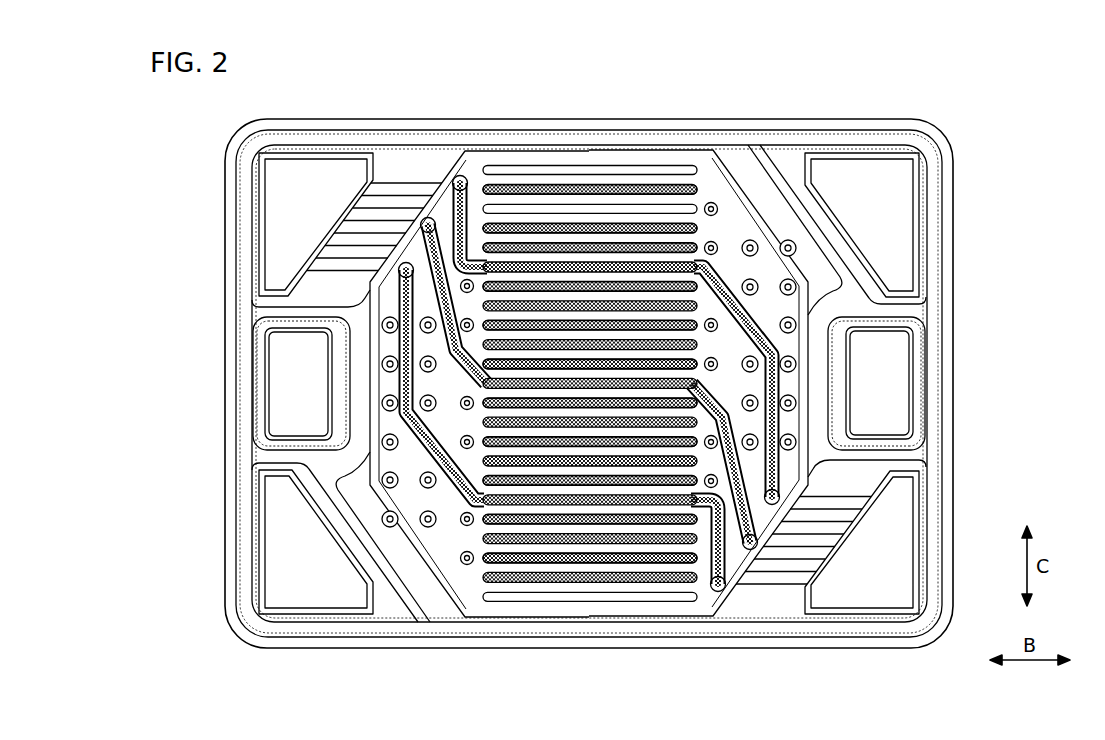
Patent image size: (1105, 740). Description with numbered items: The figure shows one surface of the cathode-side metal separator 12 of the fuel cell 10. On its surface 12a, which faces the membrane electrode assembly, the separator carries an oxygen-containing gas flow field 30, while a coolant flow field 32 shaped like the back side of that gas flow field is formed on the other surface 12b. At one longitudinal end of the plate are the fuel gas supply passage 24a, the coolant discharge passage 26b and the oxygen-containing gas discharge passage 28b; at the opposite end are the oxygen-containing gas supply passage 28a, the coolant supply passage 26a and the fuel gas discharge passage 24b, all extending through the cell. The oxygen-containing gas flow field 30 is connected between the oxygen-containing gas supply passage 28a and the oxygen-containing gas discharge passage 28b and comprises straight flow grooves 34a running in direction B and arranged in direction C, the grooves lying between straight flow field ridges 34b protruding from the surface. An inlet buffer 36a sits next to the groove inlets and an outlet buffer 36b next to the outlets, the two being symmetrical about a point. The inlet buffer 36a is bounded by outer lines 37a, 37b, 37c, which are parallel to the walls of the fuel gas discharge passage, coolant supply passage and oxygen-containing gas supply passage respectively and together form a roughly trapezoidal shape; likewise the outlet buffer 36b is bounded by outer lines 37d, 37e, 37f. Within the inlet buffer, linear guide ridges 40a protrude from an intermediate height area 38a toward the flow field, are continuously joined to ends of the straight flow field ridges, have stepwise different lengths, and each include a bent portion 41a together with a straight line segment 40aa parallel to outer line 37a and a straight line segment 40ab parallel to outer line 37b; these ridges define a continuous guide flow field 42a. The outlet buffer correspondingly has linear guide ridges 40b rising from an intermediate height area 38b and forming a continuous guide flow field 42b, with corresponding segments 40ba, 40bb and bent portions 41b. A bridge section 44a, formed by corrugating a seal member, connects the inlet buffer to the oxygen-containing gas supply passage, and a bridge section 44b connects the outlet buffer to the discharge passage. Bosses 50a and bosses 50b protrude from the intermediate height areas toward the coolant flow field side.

The fuel cell 10 is at (546, 395).
The cathode-side metal separator 12 is at (546, 395).
The surface 12a is at (889, 637).
The other surface 12b is at (937, 650).
The fuel gas supply passage 24a is at (862, 225).
The fuel gas discharge passage 24b is at (316, 542).
The coolant supply passage 26a is at (290, 378).
The coolant discharge passage 26b is at (900, 379).
The oxygen-containing gas supply passage 28a is at (312, 230).
The oxygen-containing gas discharge passage 28b is at (865, 537).
The oxygen-containing gas flow field 30 is at (600, 166).
The coolant flow field 32 is at (545, 184).
The straight flow grooves 34a is at (620, 598).
The straight flow field ridges 34b is at (540, 580).
The inlet buffer 36a is at (420, 585).
The outlet buffer 36b is at (778, 185).
The outer line 37a is at (385, 565).
The outer line 37b is at (376, 412).
The outer line 37c is at (372, 178).
The outer line 37d is at (805, 210).
The outer line 37e is at (808, 372).
The outer line 37f is at (790, 540).
The intermediate height area 38a is at (460, 580).
The intermediate height area 38b is at (718, 162).
The linear guide ridges 40a is at (428, 528).
The straight line segment 40aa is at (420, 481).
The straight line segment 40ab is at (420, 326).
The linear guide ridges 40b is at (752, 240).
The hole 40ba is at (800, 290).
The hole 40bb is at (798, 441).
The bent portion 41a is at (420, 300).
The seal member 41b is at (770, 350).
The continuous guide flow field 42a is at (382, 520).
The continuous guide flow field 42b is at (796, 252).
The bridge section 44a is at (372, 200).
The bridge section 44b is at (860, 565).
The bosses 50a is at (400, 272).
The bosses 50b is at (780, 497).